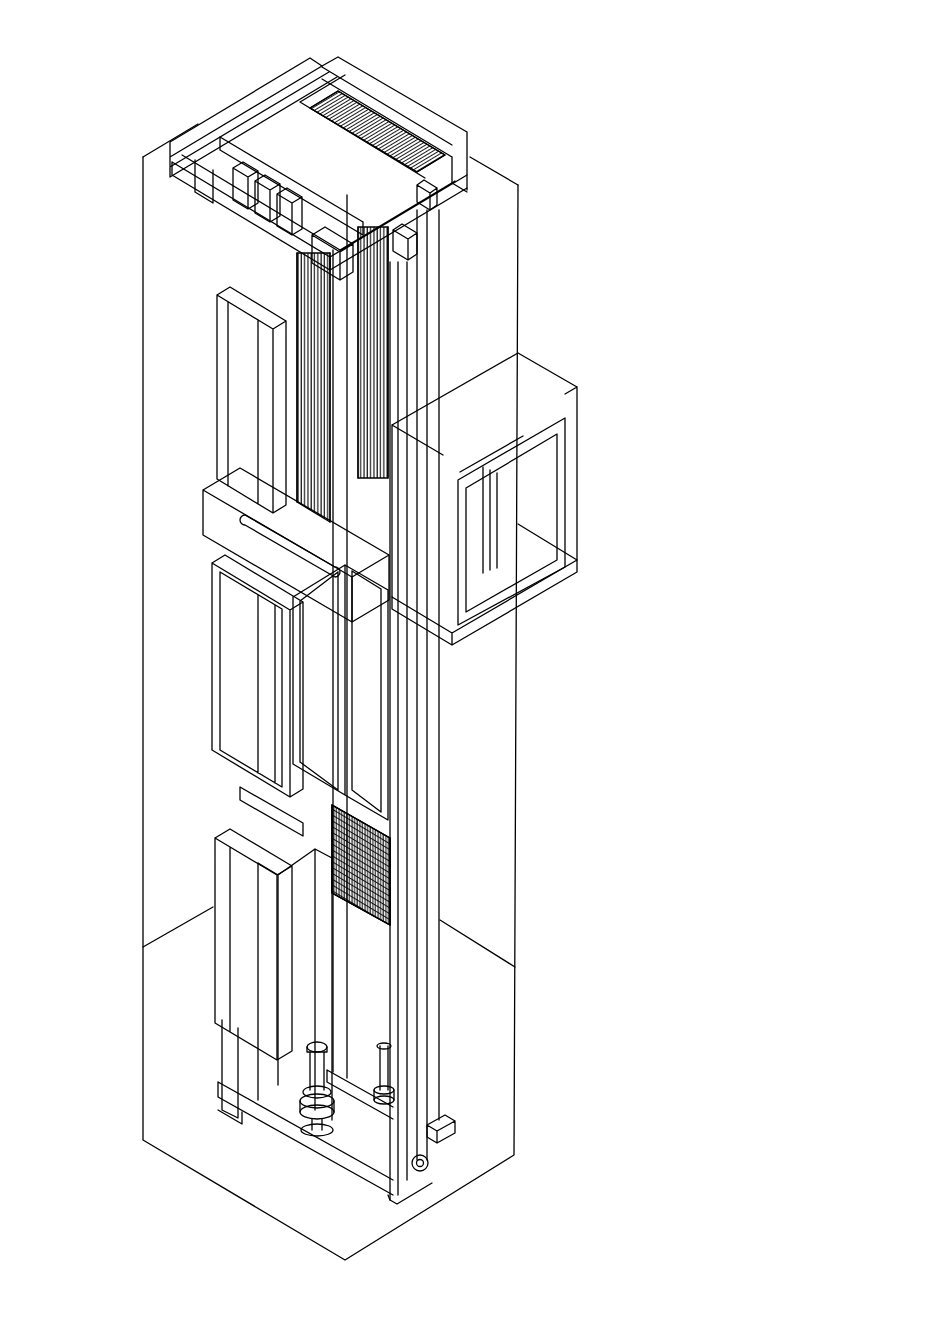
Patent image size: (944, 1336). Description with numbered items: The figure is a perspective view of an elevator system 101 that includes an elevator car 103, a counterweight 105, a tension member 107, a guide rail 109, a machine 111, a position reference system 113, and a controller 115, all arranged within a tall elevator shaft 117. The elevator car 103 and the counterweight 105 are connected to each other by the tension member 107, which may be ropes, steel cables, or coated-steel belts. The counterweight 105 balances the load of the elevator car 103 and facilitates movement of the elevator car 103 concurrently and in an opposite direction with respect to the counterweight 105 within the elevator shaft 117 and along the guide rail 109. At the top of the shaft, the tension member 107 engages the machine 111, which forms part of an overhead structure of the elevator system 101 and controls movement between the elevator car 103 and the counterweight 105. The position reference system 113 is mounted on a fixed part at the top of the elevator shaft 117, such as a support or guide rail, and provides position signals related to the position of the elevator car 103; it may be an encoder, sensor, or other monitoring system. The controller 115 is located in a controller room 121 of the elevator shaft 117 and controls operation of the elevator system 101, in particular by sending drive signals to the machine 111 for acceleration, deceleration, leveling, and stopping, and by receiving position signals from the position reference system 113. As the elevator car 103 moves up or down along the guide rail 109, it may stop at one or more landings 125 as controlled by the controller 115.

The elevator system 101 is at (541, 80).
The elevator car 103 is at (328, 698).
The counterweight 105 is at (386, 878).
The tension member 107 is at (338, 393).
The guide rail 109 is at (415, 805).
The machine 111 is at (246, 158).
The position reference system 113 is at (411, 248).
The controller 115 is at (520, 512).
The elevator shaft 117 is at (192, 811).
The controller room 121 is at (583, 382).
The landings 125 is at (215, 392).